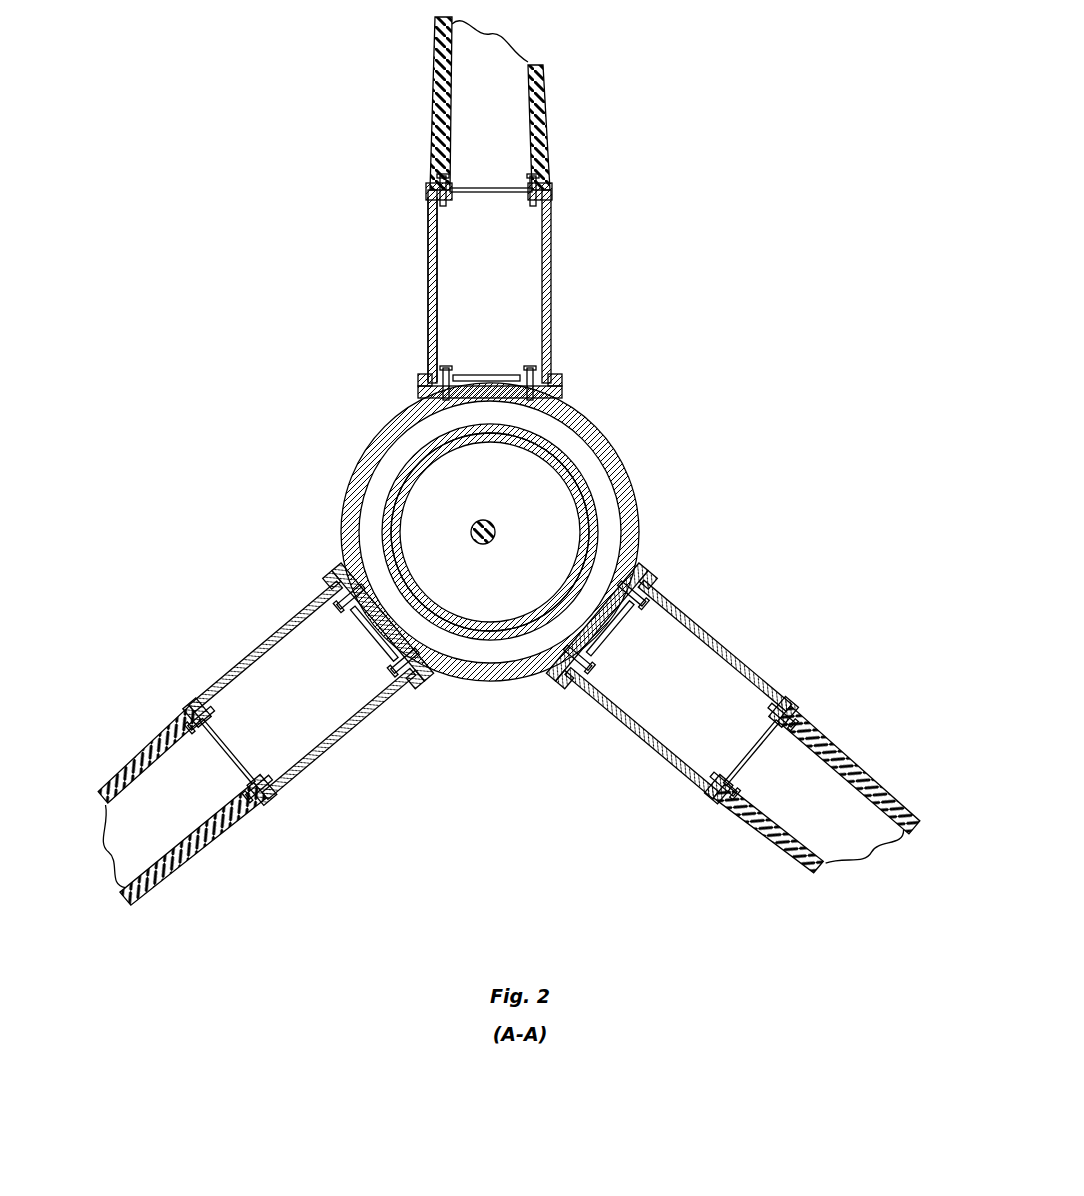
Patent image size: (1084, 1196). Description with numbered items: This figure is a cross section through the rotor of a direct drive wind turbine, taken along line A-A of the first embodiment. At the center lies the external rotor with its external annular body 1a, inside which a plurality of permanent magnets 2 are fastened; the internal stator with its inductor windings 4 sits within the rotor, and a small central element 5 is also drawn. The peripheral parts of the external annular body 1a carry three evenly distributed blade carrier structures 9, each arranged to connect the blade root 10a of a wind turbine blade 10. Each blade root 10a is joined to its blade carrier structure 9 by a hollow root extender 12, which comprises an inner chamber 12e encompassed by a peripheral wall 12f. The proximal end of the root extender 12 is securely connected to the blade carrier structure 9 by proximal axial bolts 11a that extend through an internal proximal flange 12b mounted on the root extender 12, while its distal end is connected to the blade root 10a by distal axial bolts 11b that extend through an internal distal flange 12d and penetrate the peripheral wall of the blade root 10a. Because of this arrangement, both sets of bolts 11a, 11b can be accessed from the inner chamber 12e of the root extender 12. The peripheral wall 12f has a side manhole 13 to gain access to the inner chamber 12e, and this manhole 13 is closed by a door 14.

The external annular body 1a is at (500, 681).
The permanent magnets 2 is at (383, 455).
The inductor windings 4 is at (383, 498).
The pin 5 is at (497, 528).
The blade carrier structure 9 is at (560, 381).
The wind turbine blade 10 is at (494, 463).
The blade root 10a is at (433, 143).
The proximal bolts 11a is at (418, 386).
The distal bolts 11b is at (432, 185).
The root extender 12 is at (471, 503).
The internal proximal flange 12b is at (483, 378).
The internal distal flange 12d is at (452, 191).
The inner chamber 12e is at (508, 316).
The peripheral wall 12f is at (428, 333).
The side manhole 13 is at (428, 228).
The door 14 is at (428, 268).